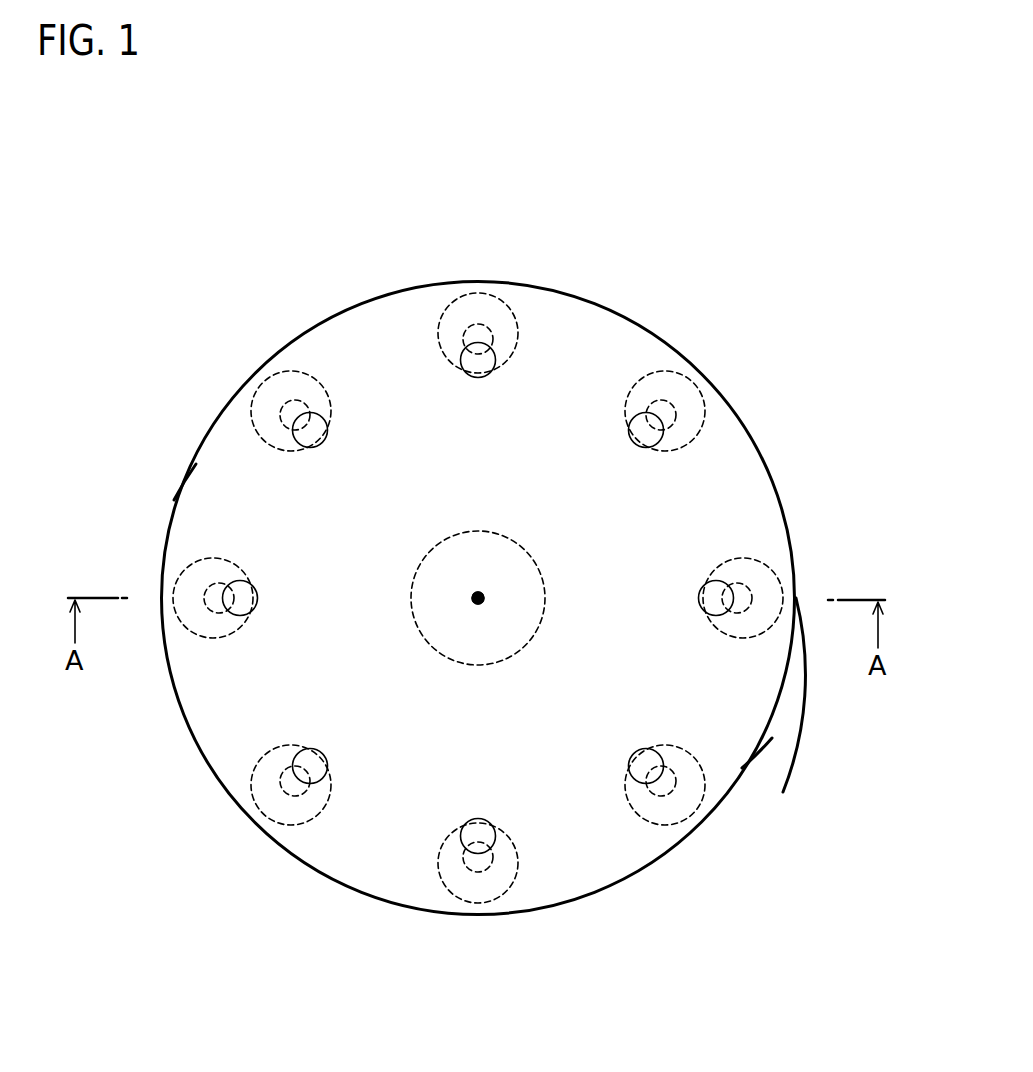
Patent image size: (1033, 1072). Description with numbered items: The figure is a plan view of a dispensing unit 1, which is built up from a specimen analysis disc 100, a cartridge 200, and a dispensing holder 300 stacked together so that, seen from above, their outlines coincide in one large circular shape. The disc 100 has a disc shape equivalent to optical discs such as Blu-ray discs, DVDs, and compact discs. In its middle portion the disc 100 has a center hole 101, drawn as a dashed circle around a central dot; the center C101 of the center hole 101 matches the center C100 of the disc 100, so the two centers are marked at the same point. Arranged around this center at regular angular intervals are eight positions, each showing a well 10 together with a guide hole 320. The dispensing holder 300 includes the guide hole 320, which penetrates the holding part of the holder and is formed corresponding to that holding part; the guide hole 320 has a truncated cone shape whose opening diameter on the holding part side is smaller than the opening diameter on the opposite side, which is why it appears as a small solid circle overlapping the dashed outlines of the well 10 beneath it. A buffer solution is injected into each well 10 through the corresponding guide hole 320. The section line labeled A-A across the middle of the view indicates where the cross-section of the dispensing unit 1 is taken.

The dispensing unit 1 is at (675, 292).
The well 10 is at (266, 380).
The specimen analysis disc 100 is at (776, 488).
The center hole 101 is at (530, 553).
The cartridge 200 is at (759, 753).
The dispensing holder 300 is at (182, 482).
The guide hole 320 is at (258, 597).
The center of the disc C100 is at (485, 600).
The center of the center hole C101 is at (583, 641).